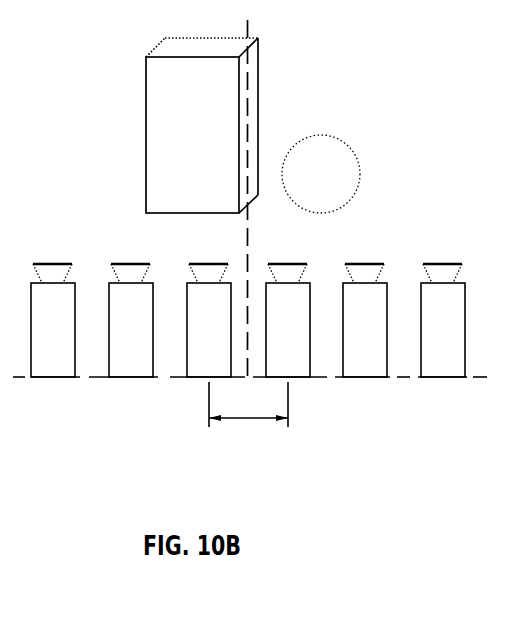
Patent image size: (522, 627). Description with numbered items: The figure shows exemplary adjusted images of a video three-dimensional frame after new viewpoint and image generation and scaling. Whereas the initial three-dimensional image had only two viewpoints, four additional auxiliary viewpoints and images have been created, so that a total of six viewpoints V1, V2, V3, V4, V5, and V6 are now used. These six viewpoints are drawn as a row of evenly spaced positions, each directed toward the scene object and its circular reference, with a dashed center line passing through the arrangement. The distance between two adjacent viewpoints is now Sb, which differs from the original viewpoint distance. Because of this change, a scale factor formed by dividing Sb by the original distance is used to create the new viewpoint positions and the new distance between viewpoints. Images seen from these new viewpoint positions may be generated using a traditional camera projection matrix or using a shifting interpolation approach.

The viewpoint V1 is at (53, 320).
The viewpoint V2 is at (131, 320).
The auxiliary viewpoint V3 is at (209, 320).
The auxiliary viewpoint V4 is at (288, 320).
The auxiliary viewpoint V5 is at (365, 320).
The auxiliary viewpoint V6 is at (443, 320).
The distance between two viewpoints Sb is at (248, 404).